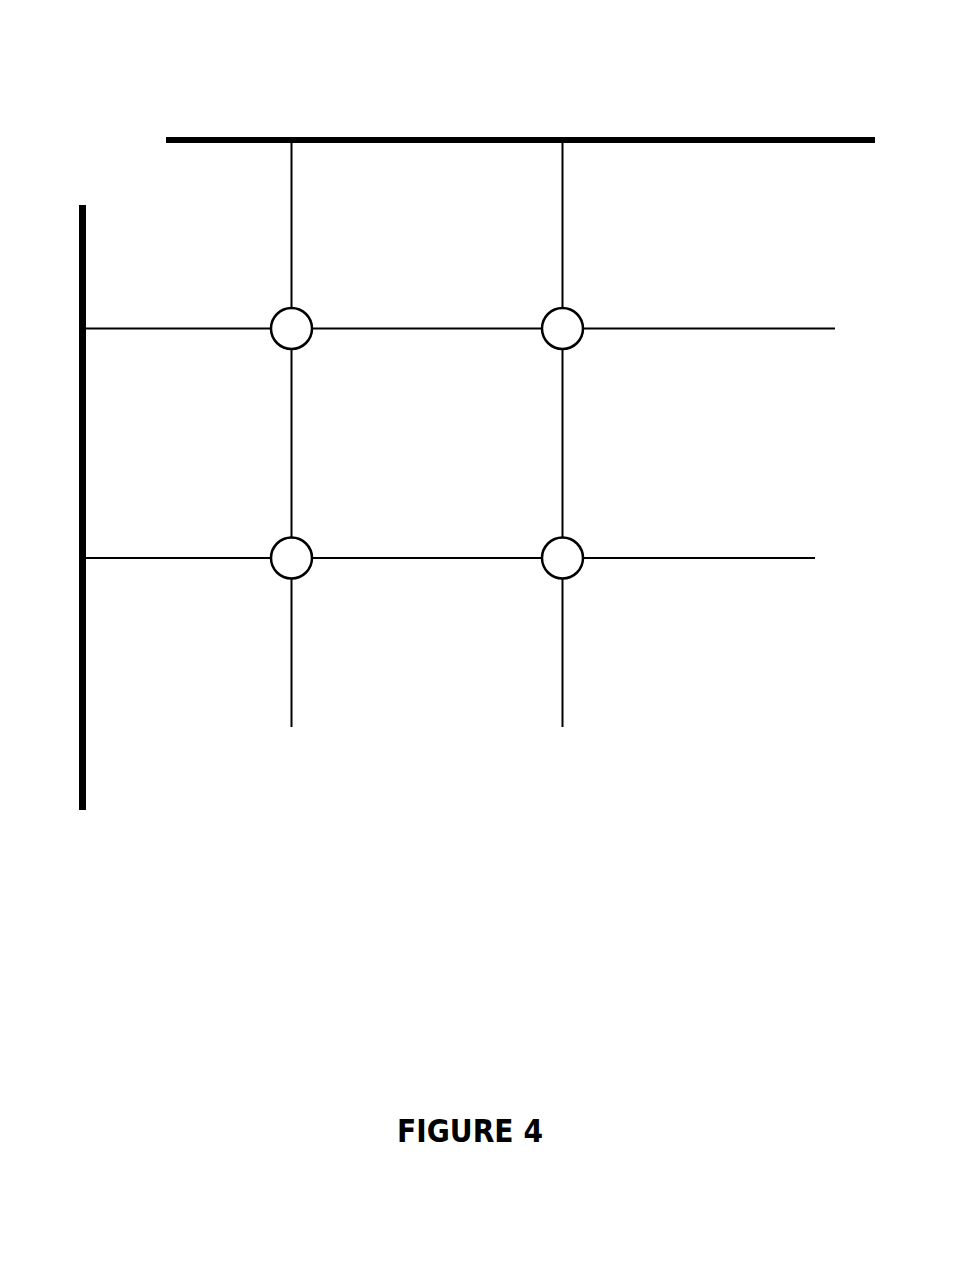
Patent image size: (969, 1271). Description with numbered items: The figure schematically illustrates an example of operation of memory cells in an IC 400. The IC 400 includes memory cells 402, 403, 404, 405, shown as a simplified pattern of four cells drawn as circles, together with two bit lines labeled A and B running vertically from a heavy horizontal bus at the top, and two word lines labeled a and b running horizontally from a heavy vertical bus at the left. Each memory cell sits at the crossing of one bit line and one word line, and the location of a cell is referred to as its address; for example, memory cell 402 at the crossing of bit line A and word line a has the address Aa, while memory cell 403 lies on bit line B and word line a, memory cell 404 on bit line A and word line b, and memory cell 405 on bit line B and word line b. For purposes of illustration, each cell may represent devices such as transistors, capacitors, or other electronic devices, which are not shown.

The IC 400 is at (521, 34).
The memory cell 402 is at (300, 311).
The memory cell 403 is at (578, 310).
The memory cell 404 is at (302, 540).
The memory cell 405 is at (578, 540).